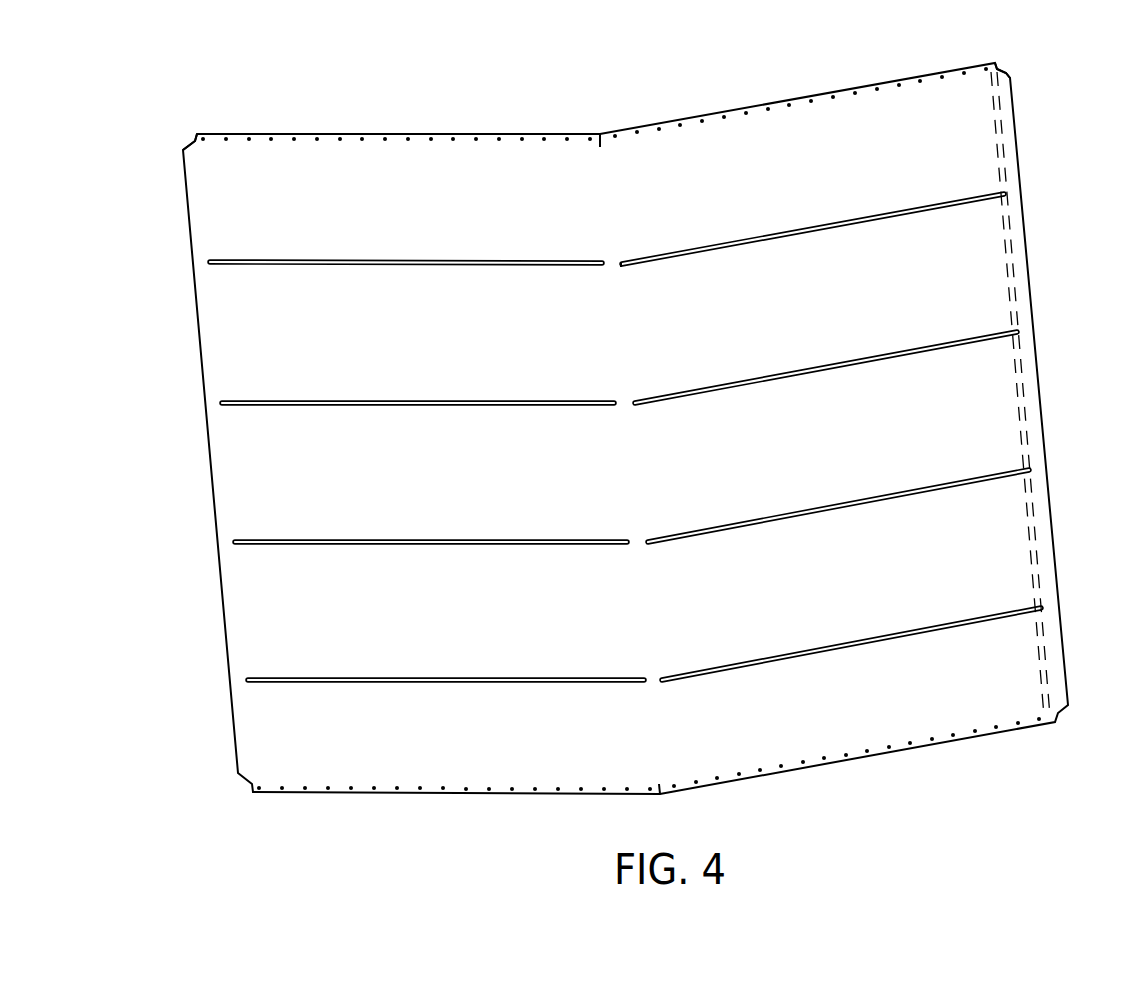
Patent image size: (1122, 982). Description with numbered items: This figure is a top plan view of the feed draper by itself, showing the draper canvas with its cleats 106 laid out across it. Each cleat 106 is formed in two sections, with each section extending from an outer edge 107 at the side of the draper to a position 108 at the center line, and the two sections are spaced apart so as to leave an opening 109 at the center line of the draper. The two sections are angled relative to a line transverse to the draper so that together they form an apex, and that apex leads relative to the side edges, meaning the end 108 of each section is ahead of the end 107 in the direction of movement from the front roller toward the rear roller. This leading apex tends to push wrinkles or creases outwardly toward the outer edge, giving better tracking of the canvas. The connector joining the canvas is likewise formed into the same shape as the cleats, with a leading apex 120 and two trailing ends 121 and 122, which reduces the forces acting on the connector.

The cleat 106 is at (813, 248).
The outer edge 107 is at (1052, 394).
The position at the center line 108 is at (656, 292).
The opening 109 is at (406, 292).
The apex 120 is at (632, 109).
The trailing end 121 is at (1042, 50).
The trailing end 122 is at (154, 126).